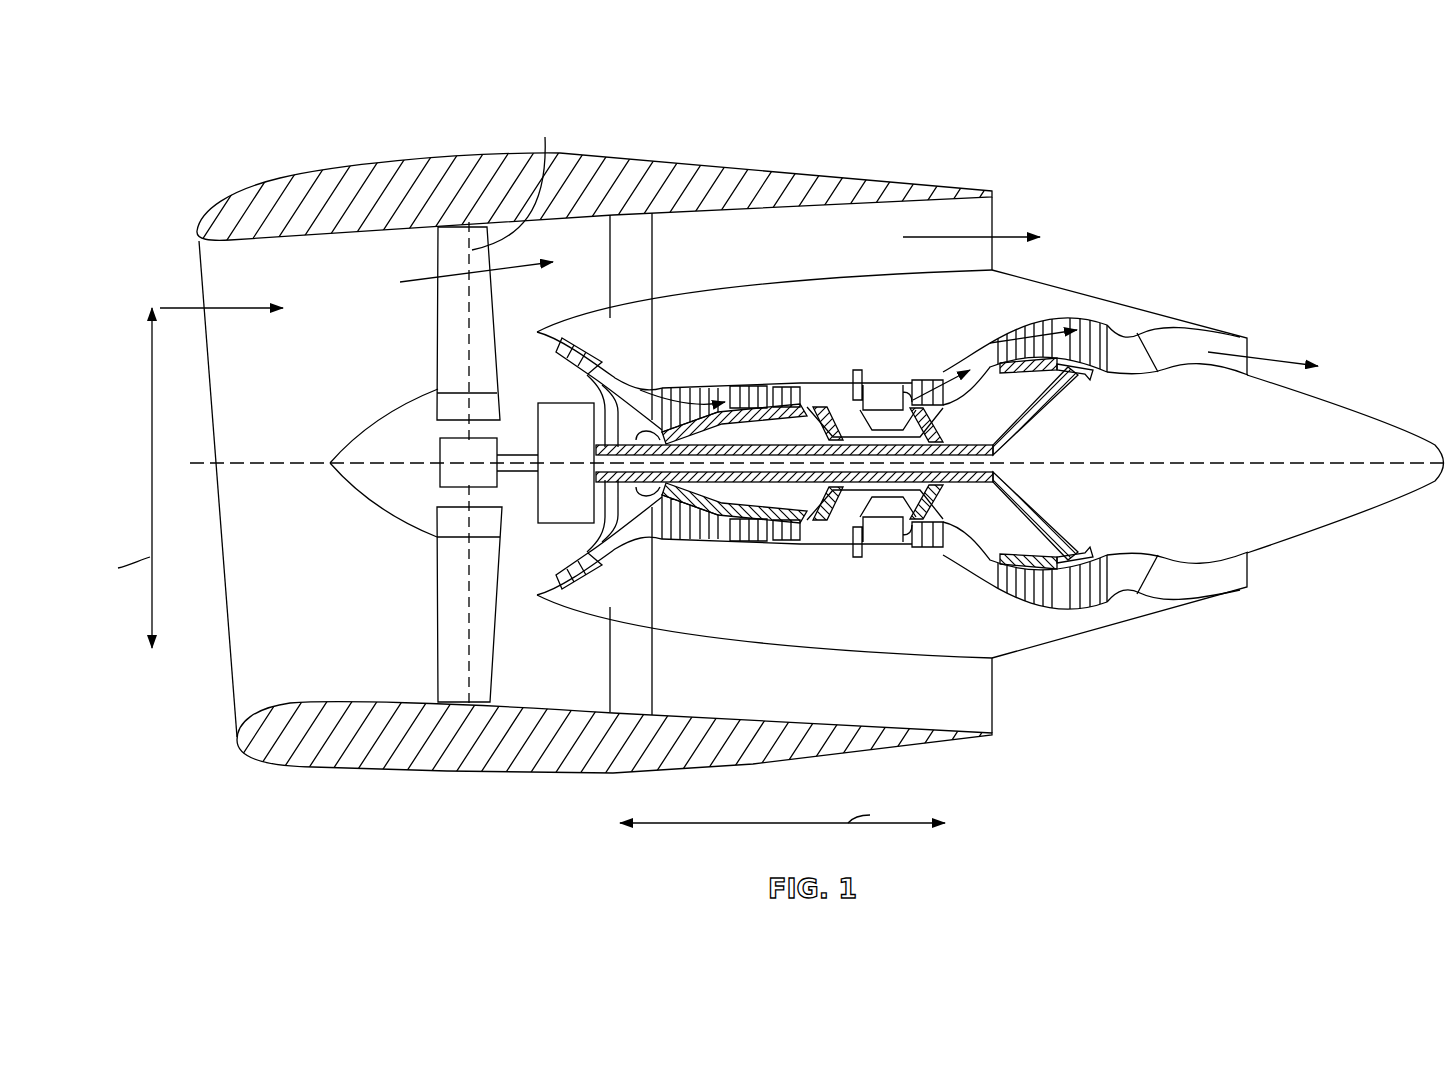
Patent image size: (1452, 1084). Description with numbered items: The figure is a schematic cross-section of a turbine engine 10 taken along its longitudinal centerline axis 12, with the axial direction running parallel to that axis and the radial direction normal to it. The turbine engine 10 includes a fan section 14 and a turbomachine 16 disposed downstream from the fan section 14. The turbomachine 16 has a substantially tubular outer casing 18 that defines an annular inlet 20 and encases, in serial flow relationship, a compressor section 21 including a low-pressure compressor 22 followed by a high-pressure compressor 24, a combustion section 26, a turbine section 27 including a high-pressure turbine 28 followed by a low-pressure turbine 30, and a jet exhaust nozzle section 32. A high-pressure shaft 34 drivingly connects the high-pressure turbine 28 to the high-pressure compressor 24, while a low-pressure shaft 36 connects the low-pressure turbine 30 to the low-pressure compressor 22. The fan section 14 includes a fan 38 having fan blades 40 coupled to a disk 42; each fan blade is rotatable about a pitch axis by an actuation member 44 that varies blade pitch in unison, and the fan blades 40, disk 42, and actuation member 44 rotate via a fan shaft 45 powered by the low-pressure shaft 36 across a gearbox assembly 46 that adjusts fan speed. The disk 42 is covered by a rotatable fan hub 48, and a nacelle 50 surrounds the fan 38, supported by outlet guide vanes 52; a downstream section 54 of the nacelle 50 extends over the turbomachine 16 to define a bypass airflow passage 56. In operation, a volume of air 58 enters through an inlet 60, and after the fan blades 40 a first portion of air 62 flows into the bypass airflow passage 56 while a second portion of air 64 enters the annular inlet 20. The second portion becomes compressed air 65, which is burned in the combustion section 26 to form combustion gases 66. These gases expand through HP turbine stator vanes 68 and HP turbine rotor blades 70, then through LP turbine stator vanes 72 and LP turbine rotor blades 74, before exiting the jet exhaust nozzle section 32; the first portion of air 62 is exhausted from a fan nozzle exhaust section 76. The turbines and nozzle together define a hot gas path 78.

The turbine engine 10 is at (1167, 153).
The longitudinal centerline axis 12 is at (1240, 455).
The fan section 14 is at (410, 241).
The turbomachine 16 is at (862, 306).
The outer casing 18 is at (830, 648).
The annular inlet 20 is at (543, 585).
The compressor section 21 is at (735, 332).
The low-pressure compressor 22 is at (590, 530).
The high-pressure compressor 24 is at (684, 532).
The combustion section 26 is at (880, 532).
The turbine section 27 is at (975, 311).
The high-pressure turbine 28 is at (952, 545).
The low-pressure turbine 30 is at (1080, 620).
The jet exhaust nozzle section 32 is at (1158, 590).
The high-pressure shaft 34 is at (855, 400).
The low-pressure shaft 36 is at (965, 445).
The fan 38 is at (328, 587).
The fan blades 40 is at (437, 610).
The disk 42 is at (453, 407).
The actuation member 44 is at (440, 452).
The fan shaft 45 is at (498, 452).
The gearbox assembly 46 is at (1233, 490).
The rotatable fan hub 48 is at (363, 497).
The nacelle 50 is at (450, 775).
The outlet guide vanes 52 is at (655, 280).
The downstream section 54 is at (868, 167).
The bypass airflow passage 56 is at (796, 254).
The volume of air 58 is at (253, 305).
The inlet 60 is at (232, 657).
The first portion of air 62 is at (418, 280).
The second portion of air 64 is at (540, 338).
The compressed air 65 is at (707, 398).
The combustion gases 66 is at (1036, 316).
The HP turbine stator vanes 68 is at (918, 553).
The HP turbine rotor blades 70 is at (928, 525).
The LP turbine stator vanes 72 is at (1000, 580).
The LP turbine rotor blades 74 is at (1008, 590).
The fan nozzle exhaust section 76 is at (983, 221).
The hot gas path 78 is at (980, 352).